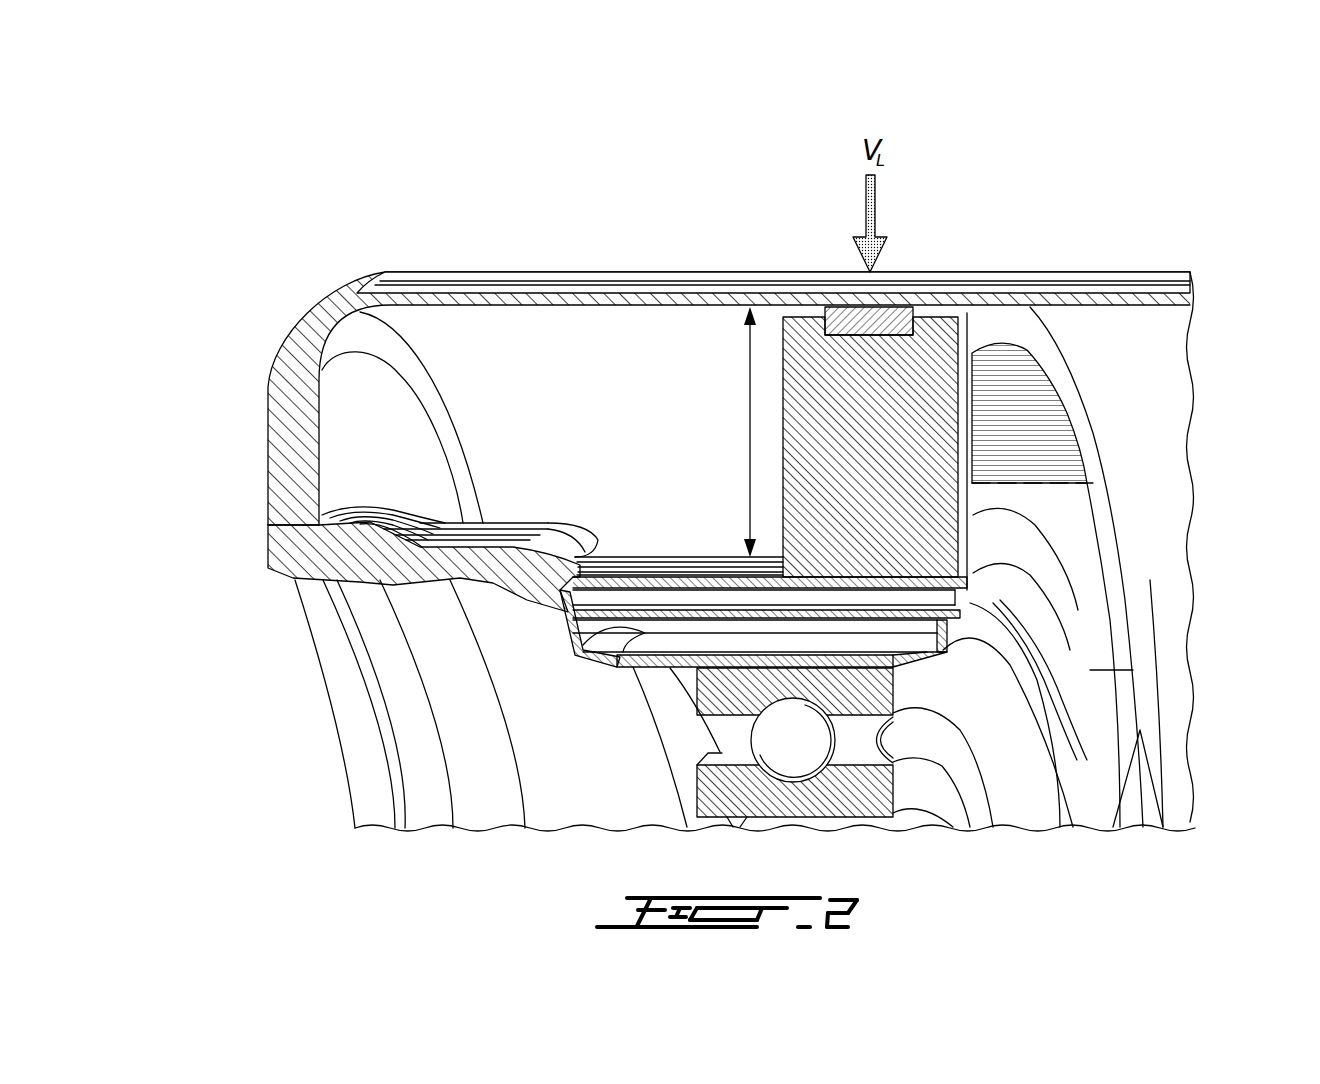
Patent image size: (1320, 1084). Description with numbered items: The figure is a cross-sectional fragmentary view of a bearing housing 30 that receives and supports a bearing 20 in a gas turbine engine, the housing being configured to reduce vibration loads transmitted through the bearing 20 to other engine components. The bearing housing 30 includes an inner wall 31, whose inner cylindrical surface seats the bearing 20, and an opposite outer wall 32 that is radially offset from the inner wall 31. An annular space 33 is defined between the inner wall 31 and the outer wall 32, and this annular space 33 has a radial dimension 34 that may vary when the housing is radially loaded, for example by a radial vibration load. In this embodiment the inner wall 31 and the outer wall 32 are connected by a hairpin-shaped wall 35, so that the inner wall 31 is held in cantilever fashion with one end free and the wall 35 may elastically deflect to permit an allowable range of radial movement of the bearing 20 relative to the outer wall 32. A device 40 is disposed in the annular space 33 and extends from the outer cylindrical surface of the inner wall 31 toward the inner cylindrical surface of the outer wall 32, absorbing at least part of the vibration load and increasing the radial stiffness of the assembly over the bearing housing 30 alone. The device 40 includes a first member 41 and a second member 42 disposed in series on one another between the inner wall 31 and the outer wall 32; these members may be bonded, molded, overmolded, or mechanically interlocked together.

The bearing housing 30 is at (648, 448).
The inner wall 31 is at (653, 553).
The outer wall 32 is at (595, 272).
The annular space 33 is at (695, 380).
The radial dimension 34 is at (750, 365).
The wall 35 is at (343, 397).
The device 40 is at (1040, 505).
The first member 41 is at (898, 320).
The second member 42 is at (1063, 443).
The bearing 20 is at (872, 803).